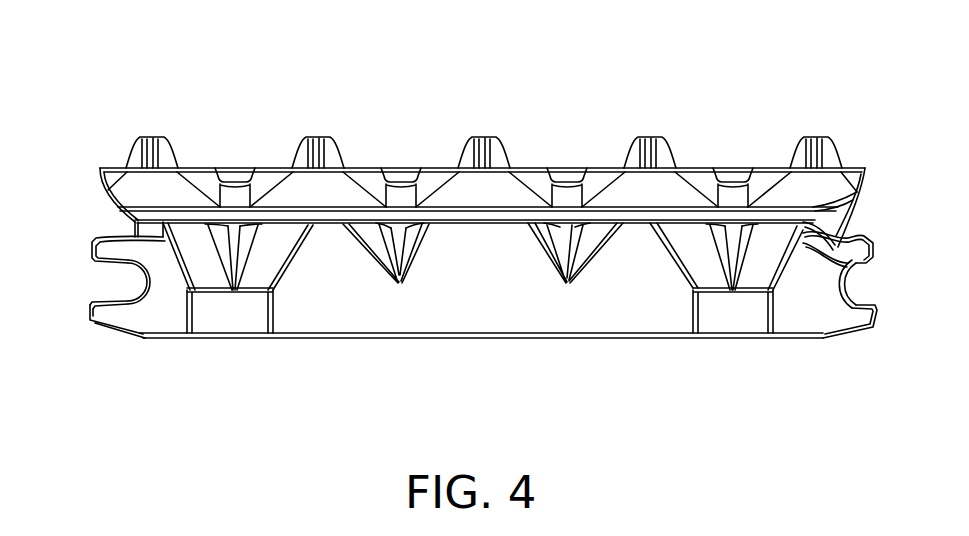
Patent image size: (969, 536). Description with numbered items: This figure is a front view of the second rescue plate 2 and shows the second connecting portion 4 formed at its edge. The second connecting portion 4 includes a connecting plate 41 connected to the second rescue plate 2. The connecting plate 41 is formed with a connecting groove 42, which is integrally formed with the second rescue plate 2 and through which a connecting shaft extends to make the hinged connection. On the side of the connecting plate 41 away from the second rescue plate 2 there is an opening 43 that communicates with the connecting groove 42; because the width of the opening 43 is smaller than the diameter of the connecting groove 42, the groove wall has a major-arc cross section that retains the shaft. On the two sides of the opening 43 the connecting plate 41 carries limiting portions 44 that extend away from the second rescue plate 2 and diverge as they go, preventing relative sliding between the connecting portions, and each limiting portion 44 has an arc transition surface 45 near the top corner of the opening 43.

The second rescue plate 2 is at (486, 120).
The second connecting portion 4 is at (852, 341).
The connecting plate 41 is at (163, 315).
The connecting groove 42 is at (118, 263).
The opening 43 is at (98, 280).
The limiting portion 44 is at (97, 324).
The arc transition surface 45 is at (92, 307).